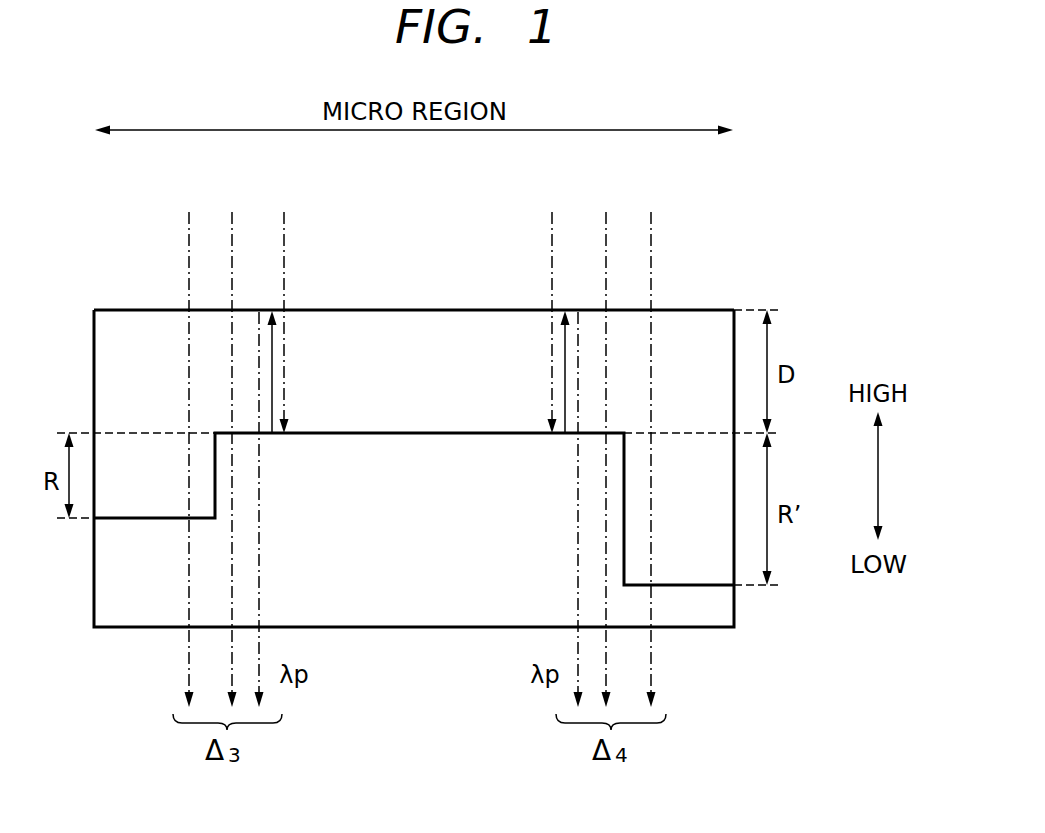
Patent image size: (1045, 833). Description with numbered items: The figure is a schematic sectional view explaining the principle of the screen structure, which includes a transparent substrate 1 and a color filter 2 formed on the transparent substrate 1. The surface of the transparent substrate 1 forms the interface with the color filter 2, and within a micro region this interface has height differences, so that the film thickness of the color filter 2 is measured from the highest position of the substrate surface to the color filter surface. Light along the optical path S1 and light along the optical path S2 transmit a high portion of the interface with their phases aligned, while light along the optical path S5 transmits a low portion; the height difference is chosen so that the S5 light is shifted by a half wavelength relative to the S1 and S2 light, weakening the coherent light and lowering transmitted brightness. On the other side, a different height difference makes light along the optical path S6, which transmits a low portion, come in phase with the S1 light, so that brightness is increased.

The transparent substrate 1 is at (703, 614).
The color filter 2 is at (711, 328).
The optical path S1 is at (419, 445).
The optical path S2 is at (419, 445).
The optical path S5 is at (190, 445).
The optical path S6 is at (651, 445).